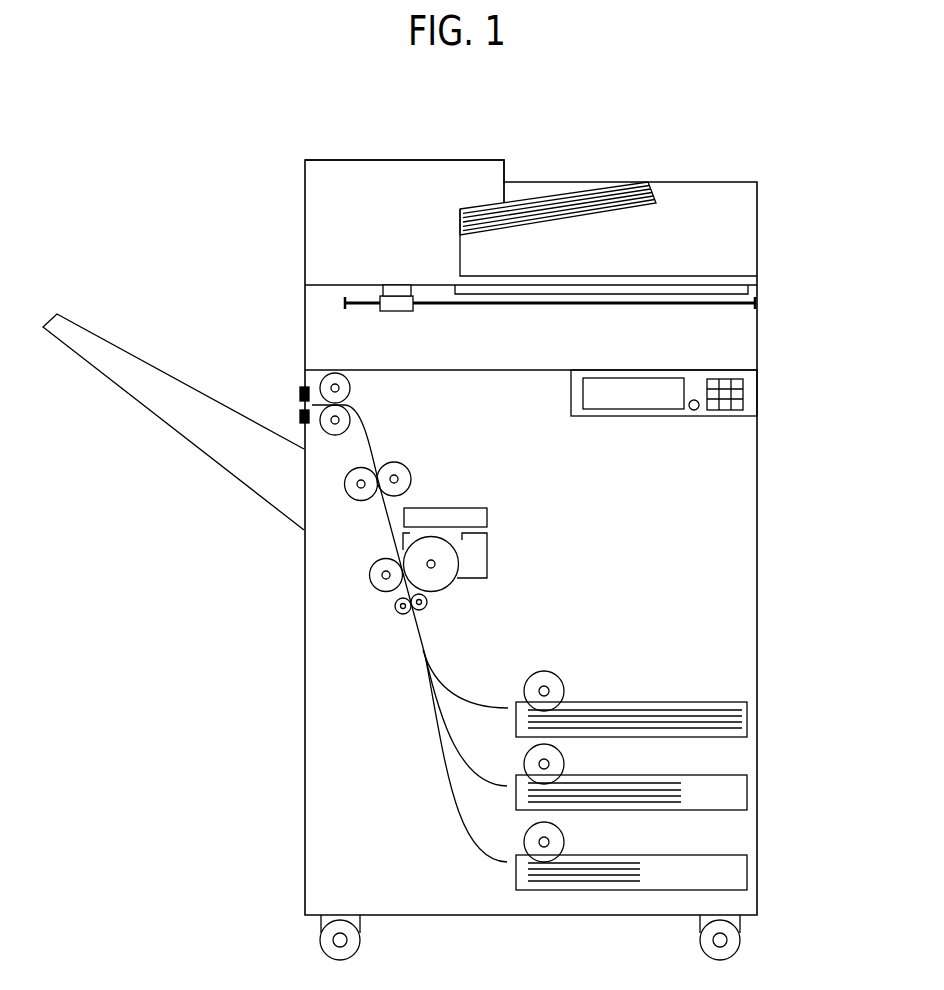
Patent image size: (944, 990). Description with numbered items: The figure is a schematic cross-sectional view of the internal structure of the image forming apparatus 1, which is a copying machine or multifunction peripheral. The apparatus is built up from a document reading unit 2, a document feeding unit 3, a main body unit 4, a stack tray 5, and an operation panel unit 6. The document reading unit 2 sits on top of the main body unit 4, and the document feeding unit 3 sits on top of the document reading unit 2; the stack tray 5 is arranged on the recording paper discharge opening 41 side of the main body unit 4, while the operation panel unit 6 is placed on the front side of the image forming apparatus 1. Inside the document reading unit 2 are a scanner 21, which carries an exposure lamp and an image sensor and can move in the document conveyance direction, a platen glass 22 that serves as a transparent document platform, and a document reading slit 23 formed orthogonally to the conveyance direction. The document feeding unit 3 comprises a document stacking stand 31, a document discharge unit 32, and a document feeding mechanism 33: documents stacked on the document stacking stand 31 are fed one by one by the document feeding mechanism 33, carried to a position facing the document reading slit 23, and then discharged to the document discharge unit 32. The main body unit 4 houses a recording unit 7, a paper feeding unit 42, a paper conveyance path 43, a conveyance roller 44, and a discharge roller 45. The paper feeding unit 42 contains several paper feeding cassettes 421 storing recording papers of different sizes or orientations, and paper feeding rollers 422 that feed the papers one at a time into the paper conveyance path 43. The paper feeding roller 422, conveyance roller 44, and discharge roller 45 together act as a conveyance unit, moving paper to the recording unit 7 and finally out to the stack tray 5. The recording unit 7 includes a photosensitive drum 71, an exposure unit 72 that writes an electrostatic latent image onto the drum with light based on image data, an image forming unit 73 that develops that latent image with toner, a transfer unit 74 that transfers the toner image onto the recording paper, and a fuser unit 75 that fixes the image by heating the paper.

The image forming apparatus 1 is at (566, 137).
The document reading unit 2 is at (530, 304).
The document feeding unit 3 is at (505, 204).
The main body unit 4 is at (772, 512).
The stack tray 5 is at (192, 456).
The operation panel unit 6 is at (751, 392).
The recording unit 7 is at (572, 480).
The scanner 21 is at (413, 310).
The platen glass 22 is at (745, 290).
The document reading slit 23 is at (398, 287).
The document stacking stand 31 is at (656, 200).
The document discharge unit 32 is at (643, 275).
The document feeding mechanism 33 is at (405, 195).
The recording paper discharge opening 41 is at (300, 406).
The paper feeding unit 42 is at (694, 777).
The paper conveyance path 43 is at (415, 641).
The conveyance roller 44 is at (395, 606).
The discharge roller 45 is at (351, 388).
The photosensitive drum 71 is at (443, 590).
The exposure unit 72 is at (487, 512).
The image forming unit 73 is at (487, 550).
The transfer unit 74 is at (370, 576).
The fuser unit 75 is at (412, 473).
The paper feeding cassette 421 is at (747, 703).
The paper feeding roller 422 is at (565, 683).